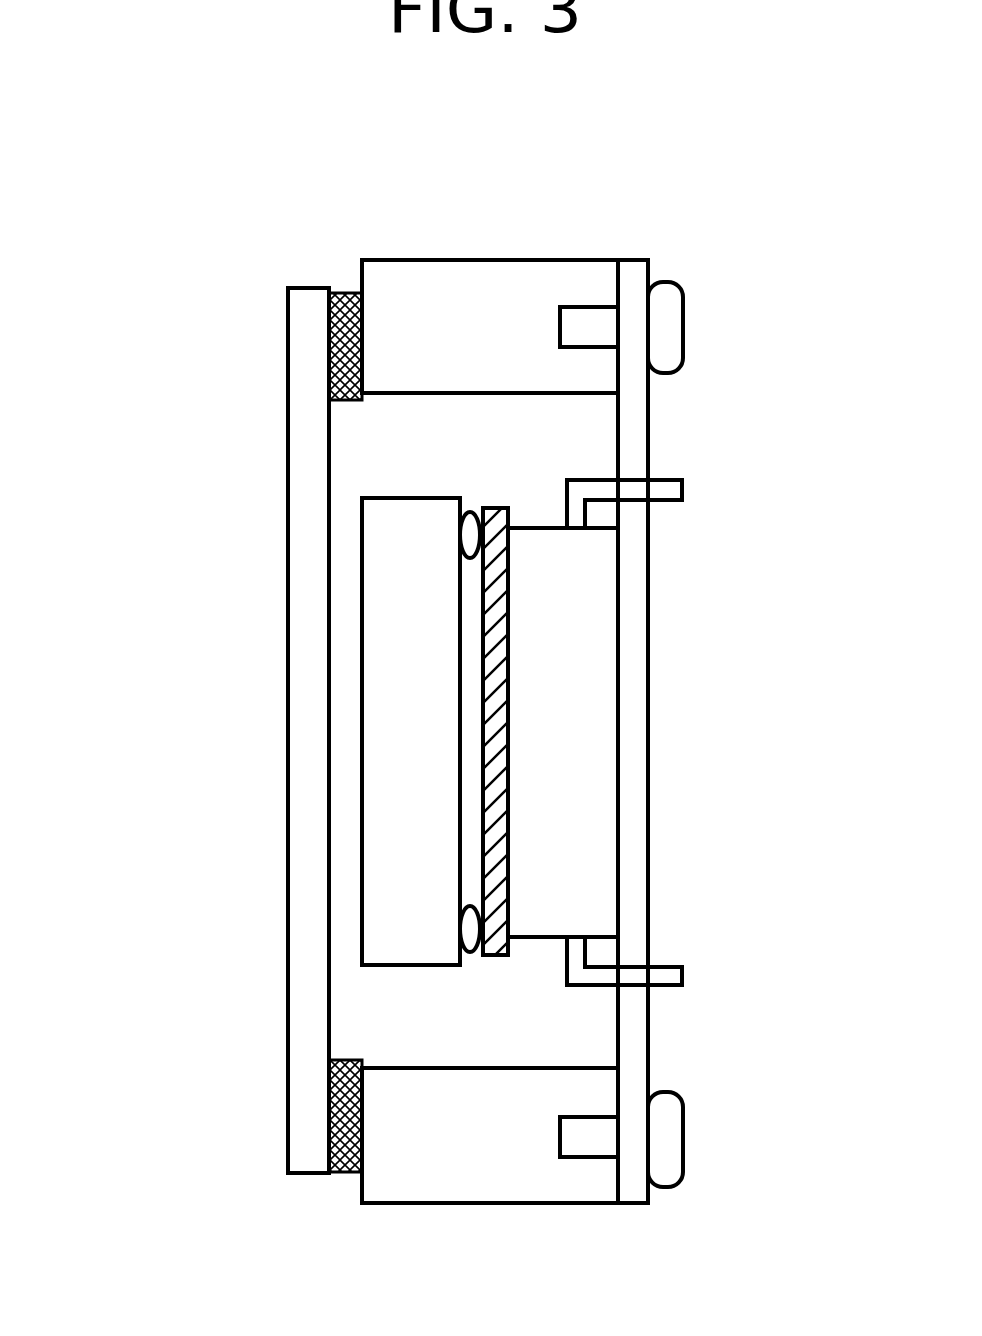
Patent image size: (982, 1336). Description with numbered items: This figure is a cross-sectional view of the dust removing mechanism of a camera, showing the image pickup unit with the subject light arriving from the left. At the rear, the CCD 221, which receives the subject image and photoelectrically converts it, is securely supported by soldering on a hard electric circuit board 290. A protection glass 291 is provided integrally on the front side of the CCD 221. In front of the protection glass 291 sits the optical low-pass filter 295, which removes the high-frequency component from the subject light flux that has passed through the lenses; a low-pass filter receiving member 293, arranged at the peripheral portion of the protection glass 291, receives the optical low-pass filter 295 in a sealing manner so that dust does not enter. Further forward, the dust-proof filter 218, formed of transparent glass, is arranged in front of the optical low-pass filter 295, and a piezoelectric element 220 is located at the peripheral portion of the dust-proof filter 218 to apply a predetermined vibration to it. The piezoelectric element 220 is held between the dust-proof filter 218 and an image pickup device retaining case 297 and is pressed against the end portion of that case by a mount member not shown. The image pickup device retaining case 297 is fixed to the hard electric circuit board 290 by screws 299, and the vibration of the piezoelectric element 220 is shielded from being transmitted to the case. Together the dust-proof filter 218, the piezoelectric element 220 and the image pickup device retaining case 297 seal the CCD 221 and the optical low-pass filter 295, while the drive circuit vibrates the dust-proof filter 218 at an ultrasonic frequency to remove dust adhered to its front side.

The dust-proof filter 218 is at (287, 1000).
The piezoelectric element 220 is at (345, 292).
The CCD 221 is at (598, 740).
The hard electric circuit board 290 is at (637, 532).
The protection glass 291 is at (497, 622).
The low-pass filter receiving member 293 is at (477, 512).
The optical low-pass filter 295 is at (360, 757).
The image pickup device retaining case 297 is at (537, 260).
The screws 299 is at (683, 312).